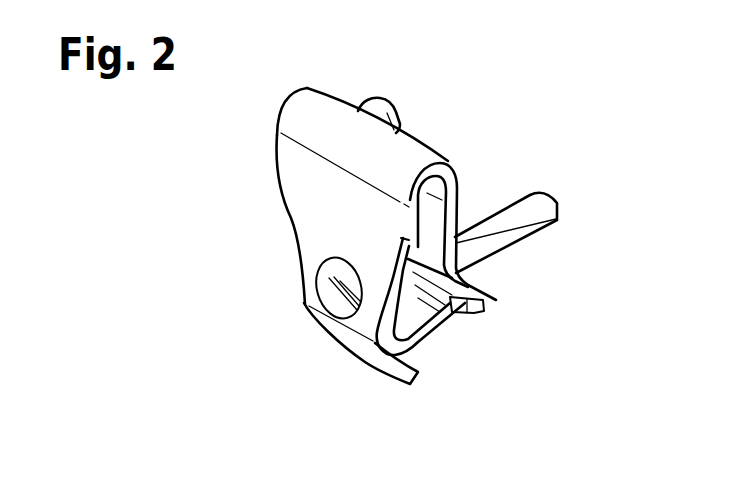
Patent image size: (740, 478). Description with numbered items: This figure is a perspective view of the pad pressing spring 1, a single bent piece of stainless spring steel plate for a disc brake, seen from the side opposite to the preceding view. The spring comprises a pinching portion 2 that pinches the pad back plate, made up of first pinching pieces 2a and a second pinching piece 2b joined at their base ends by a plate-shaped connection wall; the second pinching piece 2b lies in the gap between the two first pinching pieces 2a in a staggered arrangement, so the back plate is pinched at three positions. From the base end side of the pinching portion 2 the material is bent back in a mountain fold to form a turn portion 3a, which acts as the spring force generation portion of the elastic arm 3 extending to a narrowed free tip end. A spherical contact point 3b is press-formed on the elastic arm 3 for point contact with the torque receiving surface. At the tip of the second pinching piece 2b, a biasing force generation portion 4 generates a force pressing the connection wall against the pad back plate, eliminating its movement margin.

The pad pressing spring 1 is at (546, 158).
The pinching portion 2 is at (481, 286).
The first pinching piece 2a is at (383, 113).
The second pinching piece 2b is at (428, 330).
The elastic arm 3 is at (317, 238).
The turn portion 3a is at (305, 107).
The contact point 3b is at (330, 293).
The biasing force generation portion 4 is at (486, 307).